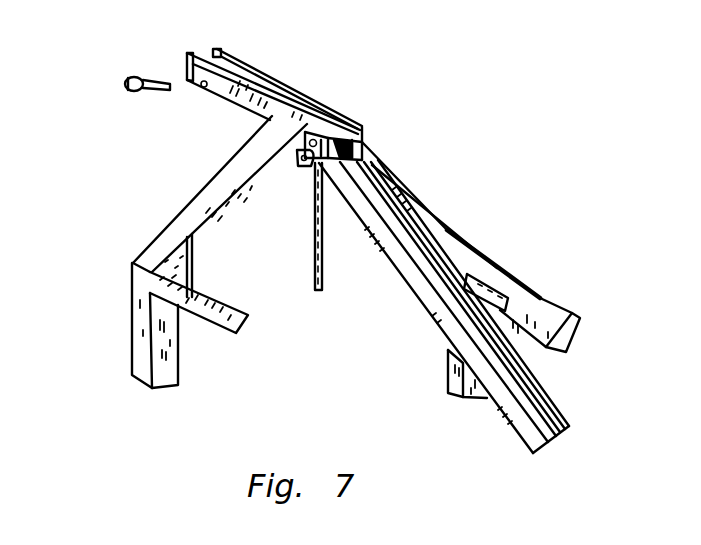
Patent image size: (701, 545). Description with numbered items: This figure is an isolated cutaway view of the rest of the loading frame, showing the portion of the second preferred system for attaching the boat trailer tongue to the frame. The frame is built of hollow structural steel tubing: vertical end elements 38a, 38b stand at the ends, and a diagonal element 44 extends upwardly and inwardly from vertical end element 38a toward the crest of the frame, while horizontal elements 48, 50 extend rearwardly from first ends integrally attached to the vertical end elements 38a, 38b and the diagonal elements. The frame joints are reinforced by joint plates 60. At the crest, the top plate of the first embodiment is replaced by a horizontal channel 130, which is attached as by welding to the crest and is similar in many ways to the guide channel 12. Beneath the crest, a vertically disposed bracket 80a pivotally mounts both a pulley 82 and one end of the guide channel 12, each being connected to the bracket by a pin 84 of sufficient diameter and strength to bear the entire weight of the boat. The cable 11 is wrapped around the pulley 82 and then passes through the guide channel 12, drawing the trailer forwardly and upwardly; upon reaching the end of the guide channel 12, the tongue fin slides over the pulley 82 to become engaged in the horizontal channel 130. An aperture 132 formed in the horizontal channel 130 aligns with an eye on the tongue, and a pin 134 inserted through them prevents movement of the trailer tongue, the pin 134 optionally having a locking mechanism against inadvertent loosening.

The cable 11 is at (316, 258).
The guide channel 12 is at (398, 280).
The vertical end element 38a is at (140, 335).
The vertical end element 38b is at (450, 368).
The diagonal element 44 is at (228, 184).
The horizontal element 48 is at (215, 335).
The horizontal element 50 is at (565, 313).
The joint plate 60 is at (160, 250).
The bracket 80a is at (303, 165).
The pulley 82 is at (362, 130).
The pin 84 is at (306, 156).
The horizontal channel 130 is at (218, 93).
The aperture 132 is at (192, 76).
The pin 134 is at (133, 78).